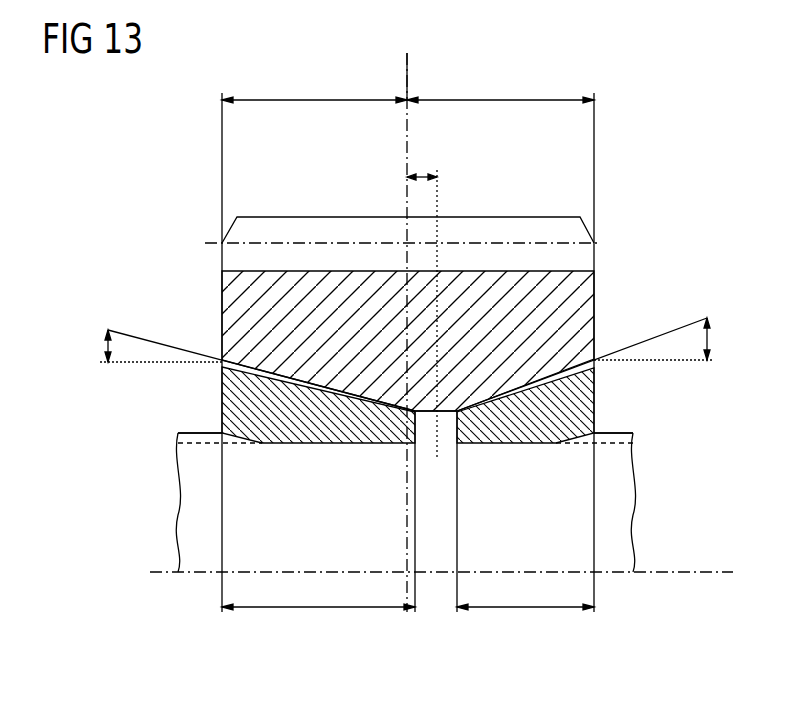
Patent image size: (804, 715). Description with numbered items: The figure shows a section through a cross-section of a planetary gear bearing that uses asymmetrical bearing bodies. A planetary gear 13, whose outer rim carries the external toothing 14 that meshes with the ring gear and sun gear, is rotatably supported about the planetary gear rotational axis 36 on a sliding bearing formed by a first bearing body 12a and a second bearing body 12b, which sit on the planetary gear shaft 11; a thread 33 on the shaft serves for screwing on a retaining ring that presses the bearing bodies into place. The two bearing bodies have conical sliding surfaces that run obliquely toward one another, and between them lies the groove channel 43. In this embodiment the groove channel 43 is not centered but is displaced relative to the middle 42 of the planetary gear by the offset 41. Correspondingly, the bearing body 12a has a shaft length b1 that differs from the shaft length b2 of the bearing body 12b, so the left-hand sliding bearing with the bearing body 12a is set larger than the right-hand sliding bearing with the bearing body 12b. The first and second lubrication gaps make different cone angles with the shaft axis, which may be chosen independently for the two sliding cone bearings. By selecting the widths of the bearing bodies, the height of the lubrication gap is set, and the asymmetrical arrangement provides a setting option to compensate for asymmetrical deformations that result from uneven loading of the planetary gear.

The planetary gear shaft 11 is at (625, 511).
The first bearing body 12a is at (222, 411).
The second bearing body 12b is at (594, 404).
The planetary gear 13 is at (594, 316).
The external toothing 14 is at (545, 229).
The thread 33 is at (178, 436).
The planetary gear rotational axis 36 is at (723, 571).
The offset 41 is at (425, 176).
The middle of the planetary gear 42 is at (410, 63).
The groove channel 43 is at (445, 423).
The shaft length of first bearing body b1 is at (317, 607).
The shaft length of second bearing body b2 is at (527, 607).